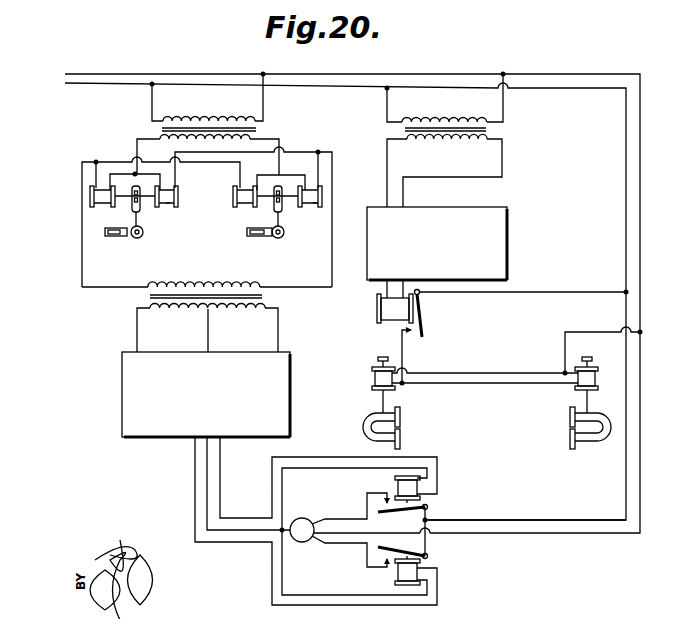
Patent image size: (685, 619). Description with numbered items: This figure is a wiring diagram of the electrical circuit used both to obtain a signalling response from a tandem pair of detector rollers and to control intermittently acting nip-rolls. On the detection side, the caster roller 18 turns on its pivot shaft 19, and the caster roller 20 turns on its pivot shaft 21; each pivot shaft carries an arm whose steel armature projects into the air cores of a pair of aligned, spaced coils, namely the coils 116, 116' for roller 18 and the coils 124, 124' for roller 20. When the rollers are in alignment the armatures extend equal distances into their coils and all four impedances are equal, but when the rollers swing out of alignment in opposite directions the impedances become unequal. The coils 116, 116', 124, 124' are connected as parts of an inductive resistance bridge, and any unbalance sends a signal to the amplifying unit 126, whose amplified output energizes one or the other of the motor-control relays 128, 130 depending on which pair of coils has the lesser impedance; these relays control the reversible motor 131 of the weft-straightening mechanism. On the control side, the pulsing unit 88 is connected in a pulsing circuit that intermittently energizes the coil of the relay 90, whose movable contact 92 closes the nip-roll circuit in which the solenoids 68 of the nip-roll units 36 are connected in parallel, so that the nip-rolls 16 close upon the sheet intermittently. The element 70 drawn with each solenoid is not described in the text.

The coil 116 is at (114, 203).
The coil 116' is at (194, 210).
The caster roller 18 is at (111, 238).
The pivot shaft 19 is at (141, 238).
The coil 124 is at (261, 200).
The coil 124' is at (314, 225).
The caster roller 20 is at (247, 238).
The pivot shaft 21 is at (280, 238).
The amplifying unit 126 is at (132, 396).
The pulsing unit 88 is at (505, 242).
The relay 90 is at (378, 307).
The movable contact 92 is at (424, 312).
The valve stem 70 is at (383, 357).
The solenoid 68 is at (372, 379).
The nip-roll unit 36 is at (366, 428).
The nip-roll 16 is at (402, 441).
The motor-control relay 128 is at (397, 488).
The motor-control relay 130 is at (397, 574).
The reversible motor 131 is at (292, 519).